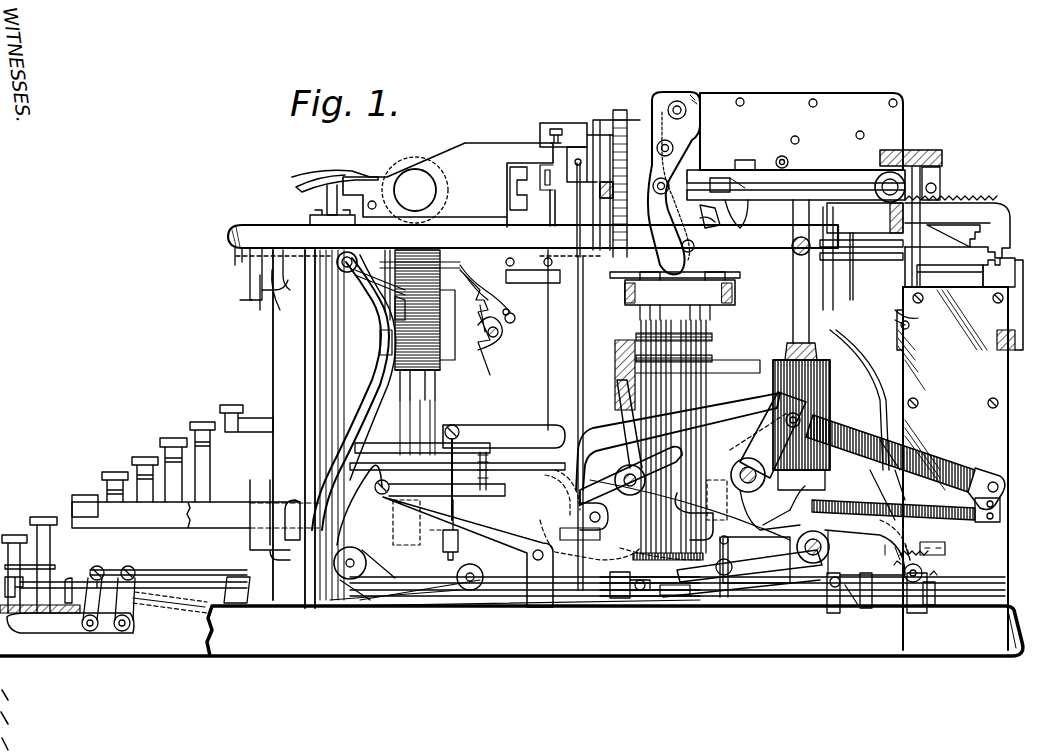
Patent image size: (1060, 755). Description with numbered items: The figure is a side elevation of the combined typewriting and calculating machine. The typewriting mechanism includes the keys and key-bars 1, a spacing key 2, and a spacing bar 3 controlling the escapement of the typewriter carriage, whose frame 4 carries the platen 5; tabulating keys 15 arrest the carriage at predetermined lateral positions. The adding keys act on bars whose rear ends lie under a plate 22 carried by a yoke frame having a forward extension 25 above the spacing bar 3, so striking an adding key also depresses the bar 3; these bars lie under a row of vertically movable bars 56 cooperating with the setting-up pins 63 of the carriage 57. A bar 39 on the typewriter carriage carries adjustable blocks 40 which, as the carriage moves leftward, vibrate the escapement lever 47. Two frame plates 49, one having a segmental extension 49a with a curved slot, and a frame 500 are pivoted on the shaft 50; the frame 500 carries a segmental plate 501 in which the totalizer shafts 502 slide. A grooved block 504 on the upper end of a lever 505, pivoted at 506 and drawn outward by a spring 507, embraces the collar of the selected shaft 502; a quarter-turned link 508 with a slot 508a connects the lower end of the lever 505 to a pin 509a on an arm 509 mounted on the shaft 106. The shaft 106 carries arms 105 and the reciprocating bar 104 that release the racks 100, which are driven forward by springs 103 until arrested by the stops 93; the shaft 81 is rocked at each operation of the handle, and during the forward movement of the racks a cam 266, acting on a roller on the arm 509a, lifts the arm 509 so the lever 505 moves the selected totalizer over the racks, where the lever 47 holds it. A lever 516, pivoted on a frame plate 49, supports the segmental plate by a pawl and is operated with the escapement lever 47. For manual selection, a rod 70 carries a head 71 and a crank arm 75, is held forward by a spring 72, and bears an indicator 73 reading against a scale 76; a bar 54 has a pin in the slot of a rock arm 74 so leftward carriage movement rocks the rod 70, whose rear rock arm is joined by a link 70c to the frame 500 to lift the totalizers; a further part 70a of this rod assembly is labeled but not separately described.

The keys and key-bars 1 is at (110, 472).
The spacing key 2 is at (80, 498).
The spacing bar 3 is at (440, 543).
The frame of the typewriter carriage 4 is at (478, 185).
The platen 5 is at (416, 158).
The tabulating keys 15 is at (228, 404).
The plate 22 is at (620, 558).
The forward extension 25 is at (510, 545).
The bar 39 is at (556, 128).
The adjustable blocks 40 is at (572, 132).
The escapement lever 47 is at (702, 138).
The frame plates 49 is at (805, 180).
The segmental extension 49a is at (717, 224).
The shaft 50 is at (920, 165).
The bar 54 is at (692, 98).
The vertically movable bars 56 is at (760, 345).
The carriage 57 is at (675, 296).
The setting-up pins 63 is at (720, 345).
The rod 70 is at (460, 330).
The top plate 70a is at (513, 250).
The link 70c is at (815, 222).
The head 71 is at (250, 265).
The spring 72 is at (265, 310).
The indicator 73 is at (273, 272).
The rock arm 74 is at (553, 227).
The crank arm 75 is at (250, 285).
The scale 76 is at (308, 310).
The shaft 81 is at (710, 460).
The stops 93 is at (575, 278).
The racks 100 is at (964, 273).
The springs 103 is at (832, 372).
The reciprocating bar 104 is at (938, 459).
The arms 105 is at (848, 320).
The shaft 106 is at (830, 544).
The cam 266 is at (776, 523).
The frame 500 is at (740, 175).
The segmental plate 501 is at (745, 210).
The shafts 502 is at (696, 102).
The grooved block 504 is at (718, 186).
The lever 505 is at (780, 320).
The pivot 506 is at (590, 420).
The spring 507 is at (545, 320).
The link 508 is at (660, 600).
The slot 508a is at (723, 600).
The arm 509 is at (802, 575).
The pin 509a is at (830, 600).
The lever 516 is at (510, 210).